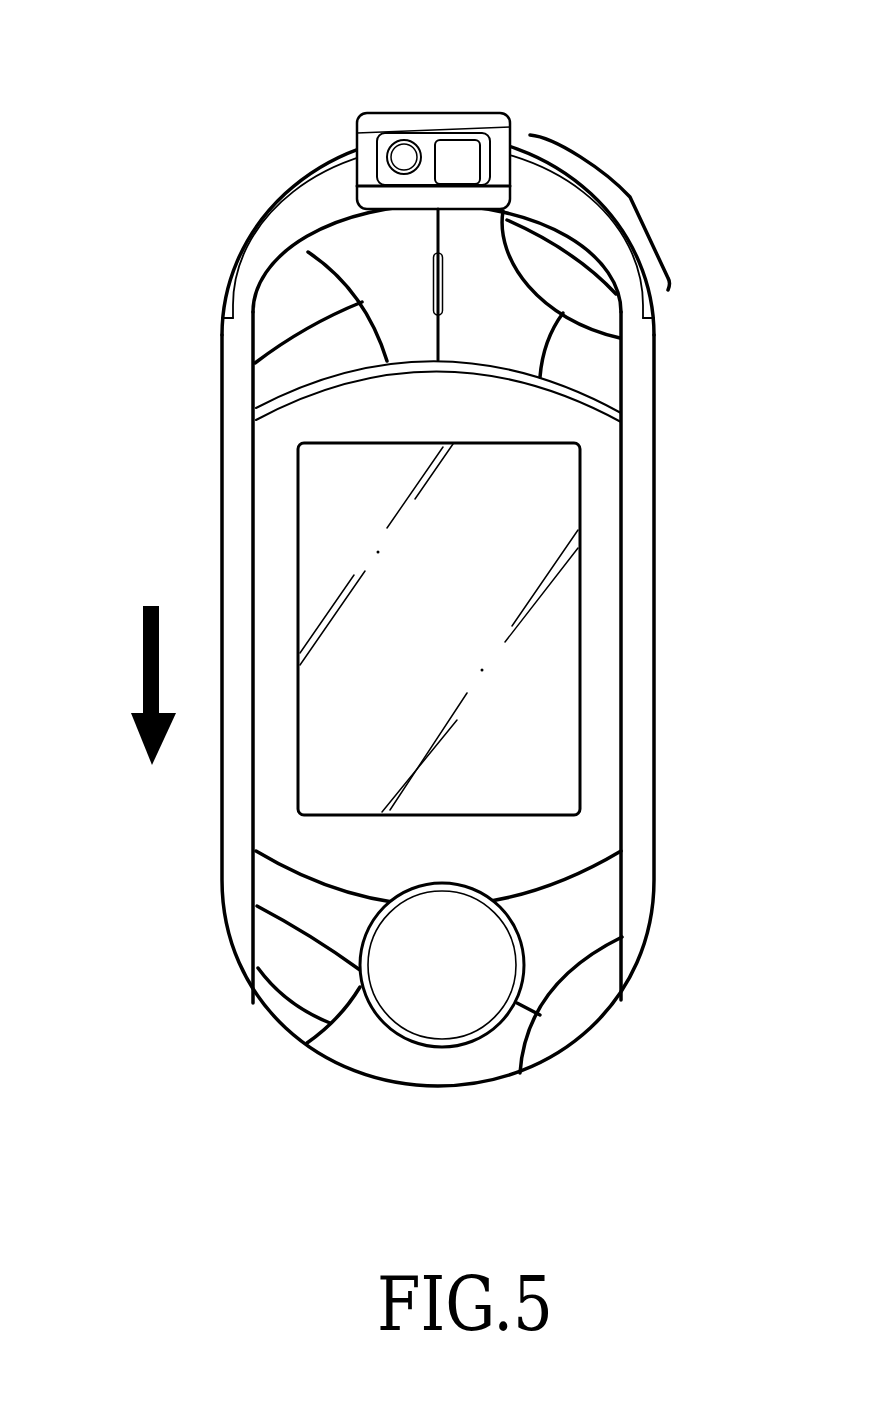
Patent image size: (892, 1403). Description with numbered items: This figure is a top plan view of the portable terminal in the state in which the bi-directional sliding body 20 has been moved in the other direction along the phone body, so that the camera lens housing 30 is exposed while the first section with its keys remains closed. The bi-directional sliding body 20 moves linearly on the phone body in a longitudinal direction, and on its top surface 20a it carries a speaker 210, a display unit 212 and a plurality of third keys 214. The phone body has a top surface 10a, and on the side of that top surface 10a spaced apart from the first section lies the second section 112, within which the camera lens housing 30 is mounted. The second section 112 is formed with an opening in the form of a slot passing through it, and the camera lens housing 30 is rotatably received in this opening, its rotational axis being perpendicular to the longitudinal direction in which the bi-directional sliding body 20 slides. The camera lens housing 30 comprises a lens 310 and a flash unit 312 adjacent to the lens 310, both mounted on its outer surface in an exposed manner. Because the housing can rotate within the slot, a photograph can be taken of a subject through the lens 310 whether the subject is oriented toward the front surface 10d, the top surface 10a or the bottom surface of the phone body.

The top surface 10a is at (262, 261).
The front surface 10d is at (282, 182).
The second section 112 is at (631, 192).
The bi-directional sliding body 20 is at (666, 783).
The top surface 20a is at (600, 492).
The speaker 210 is at (441, 289).
The display unit 212 is at (557, 658).
The third keys 214 is at (438, 1025).
The camera lens housing 30 is at (439, 100).
The lens 310 is at (399, 150).
The flash unit 312 is at (467, 150).